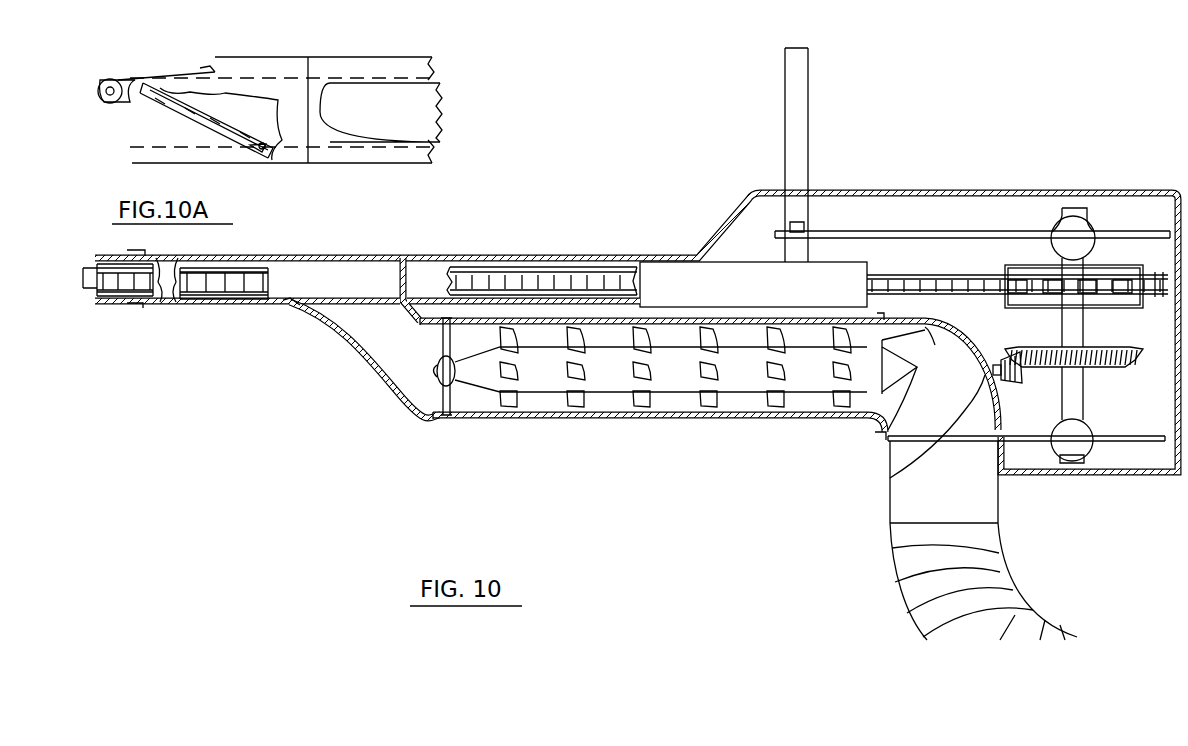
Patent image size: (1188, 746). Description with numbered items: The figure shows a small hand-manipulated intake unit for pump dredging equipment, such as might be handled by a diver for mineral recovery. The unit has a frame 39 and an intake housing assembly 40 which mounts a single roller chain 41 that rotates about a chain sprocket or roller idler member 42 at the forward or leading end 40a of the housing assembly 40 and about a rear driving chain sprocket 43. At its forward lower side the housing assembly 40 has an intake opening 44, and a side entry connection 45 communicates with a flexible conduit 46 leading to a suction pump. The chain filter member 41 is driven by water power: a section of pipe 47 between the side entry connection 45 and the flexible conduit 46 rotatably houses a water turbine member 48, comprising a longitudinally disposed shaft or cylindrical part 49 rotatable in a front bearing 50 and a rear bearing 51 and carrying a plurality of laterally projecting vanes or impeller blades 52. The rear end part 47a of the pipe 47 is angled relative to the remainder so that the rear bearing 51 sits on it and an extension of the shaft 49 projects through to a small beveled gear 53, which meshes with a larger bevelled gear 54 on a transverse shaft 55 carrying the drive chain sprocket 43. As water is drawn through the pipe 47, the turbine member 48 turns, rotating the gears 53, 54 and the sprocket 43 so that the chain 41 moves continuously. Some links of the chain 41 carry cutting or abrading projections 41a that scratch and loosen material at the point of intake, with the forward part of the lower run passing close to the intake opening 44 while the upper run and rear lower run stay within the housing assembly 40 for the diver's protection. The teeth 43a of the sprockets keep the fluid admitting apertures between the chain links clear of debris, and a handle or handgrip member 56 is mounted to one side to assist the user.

In FIG. 10, the frame 39 is at (945, 232).
In FIG. 10, the intake housing assembly 40 is at (641, 262).
In FIG. 10, the forward or leading end 40a is at (283, 301).
In FIG. 10A, the forward or leading end 40a is at (197, 88).
In FIG. 10, the roller chain 41 is at (578, 256).
In FIG. 10A, the roller chain 41 is at (183, 132).
In FIG. 10, the cutting or abrading projections 41a is at (88, 270).
In FIG. 10A, the cutting or abrading projections 41a is at (222, 138).
In FIG. 10A, the chain sprocket or roller idler member 42 is at (135, 97).
In FIG. 10, the rear driving chain sprocket 43 is at (1097, 287).
In FIG. 10, the teeth 43a is at (1052, 283).
In FIG. 10, the intake opening 44 is at (212, 295).
In FIG. 10A, the intake opening 44 is at (232, 146).
In FIG. 10, the side entry connection 45 is at (352, 365).
In FIG. 10, the flexible conduit 46 is at (890, 575).
In FIG. 10, the section of pipe 47 is at (633, 416).
In FIG. 10, the rear end part 47a is at (930, 408).
In FIG. 10, the water turbine member 48 is at (692, 392).
In FIG. 10, the shaft or cylindrical part 49 is at (757, 370).
In FIG. 10, the front bearing 50 is at (438, 392).
In FIG. 10, the rear bearing 51 is at (890, 480).
In FIG. 10, the vanes or impeller blades 52 is at (580, 403).
In FIG. 10, the small beveled gear 53 is at (1000, 386).
In FIG. 10, the larger bevelled gear 54 is at (1140, 410).
In FIG. 10, the transverse shaft 55 is at (1087, 450).
In FIG. 10, the handle or handgrip member 56 is at (808, 83).